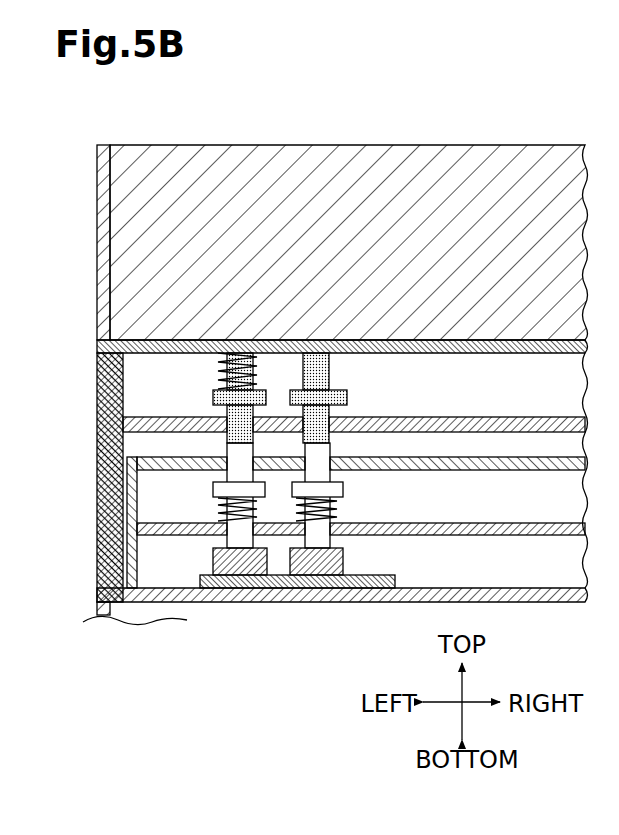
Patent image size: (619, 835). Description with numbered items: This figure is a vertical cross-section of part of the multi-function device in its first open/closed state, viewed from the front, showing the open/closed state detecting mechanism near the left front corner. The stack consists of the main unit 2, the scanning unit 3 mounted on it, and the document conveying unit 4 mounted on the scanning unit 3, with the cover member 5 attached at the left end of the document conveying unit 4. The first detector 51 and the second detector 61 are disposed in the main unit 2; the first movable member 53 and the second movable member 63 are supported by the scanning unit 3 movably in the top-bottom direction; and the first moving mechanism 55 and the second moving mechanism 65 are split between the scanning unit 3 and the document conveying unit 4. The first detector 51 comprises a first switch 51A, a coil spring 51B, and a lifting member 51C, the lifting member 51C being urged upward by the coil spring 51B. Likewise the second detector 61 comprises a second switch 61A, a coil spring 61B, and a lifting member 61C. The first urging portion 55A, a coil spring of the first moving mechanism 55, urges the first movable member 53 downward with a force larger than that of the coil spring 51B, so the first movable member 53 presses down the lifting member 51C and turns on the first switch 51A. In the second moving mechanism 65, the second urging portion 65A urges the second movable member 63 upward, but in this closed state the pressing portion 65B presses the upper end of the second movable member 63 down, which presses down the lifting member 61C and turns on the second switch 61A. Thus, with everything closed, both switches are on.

The main unit 2 is at (97, 600).
The scanning unit 3 is at (97, 347).
The document conveying unit 4 is at (161, 145).
The cover member 5 is at (97, 167).
The first detector 51 is at (206, 557).
The first switch 51A is at (213, 560).
The coil spring 51B is at (222, 506).
The lifting member 51C is at (213, 488).
The first movable member 53 is at (213, 397).
The first moving mechanism 55 is at (149, 398).
The first urging portion 55A is at (225, 368).
The second detector 61 is at (350, 557).
The second switch 61A is at (343, 560).
The coil spring 61B is at (340, 506).
The lifting member 61C is at (343, 487).
The second movable member 63 is at (330, 378).
The second moving mechanism 65 is at (398, 398).
The second urging portion 65A is at (347, 398).
The pressing portion 65B is at (332, 362).